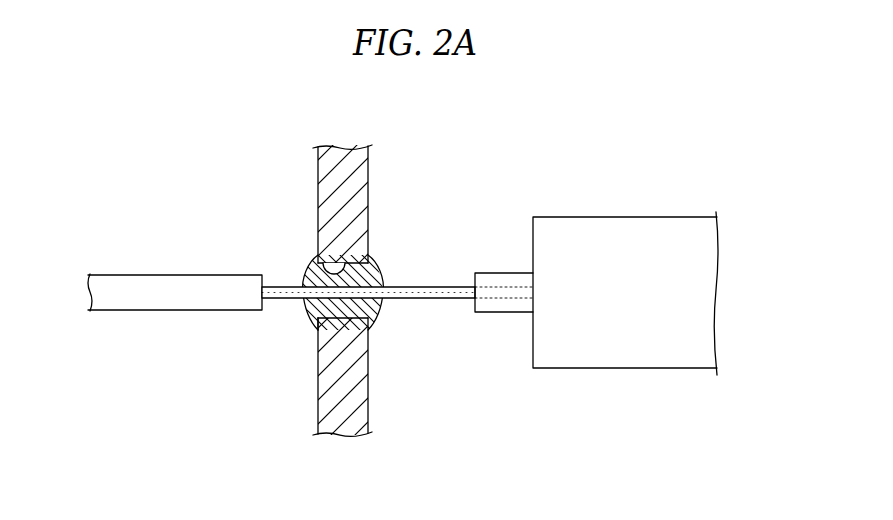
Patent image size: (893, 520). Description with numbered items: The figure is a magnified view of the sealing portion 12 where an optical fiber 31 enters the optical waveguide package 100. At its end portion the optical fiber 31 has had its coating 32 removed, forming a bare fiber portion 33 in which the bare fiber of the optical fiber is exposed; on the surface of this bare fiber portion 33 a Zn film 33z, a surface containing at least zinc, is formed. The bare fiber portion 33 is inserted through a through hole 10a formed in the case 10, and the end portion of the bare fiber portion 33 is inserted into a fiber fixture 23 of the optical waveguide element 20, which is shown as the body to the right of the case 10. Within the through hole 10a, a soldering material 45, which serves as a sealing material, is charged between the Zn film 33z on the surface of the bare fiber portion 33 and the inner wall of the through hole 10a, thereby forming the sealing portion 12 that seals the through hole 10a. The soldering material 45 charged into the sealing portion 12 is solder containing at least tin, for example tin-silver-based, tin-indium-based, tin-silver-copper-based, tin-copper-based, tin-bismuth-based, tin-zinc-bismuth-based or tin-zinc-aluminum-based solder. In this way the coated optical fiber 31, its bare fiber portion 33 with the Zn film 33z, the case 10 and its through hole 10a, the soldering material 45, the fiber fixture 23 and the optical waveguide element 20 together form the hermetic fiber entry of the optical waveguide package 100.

The case 10 is at (361, 173).
The through hole 10a is at (311, 273).
The sealing portion 12 is at (302, 310).
The optical waveguide element 20 is at (633, 368).
The fiber fixture 23 is at (500, 313).
The optical fiber 31 is at (310, 270).
The coating 32 is at (175, 302).
The bare fiber portion 33 is at (397, 253).
The Zn film 33z is at (458, 288).
The soldering material 45 is at (379, 312).
The optical waveguide package 100 is at (596, 263).